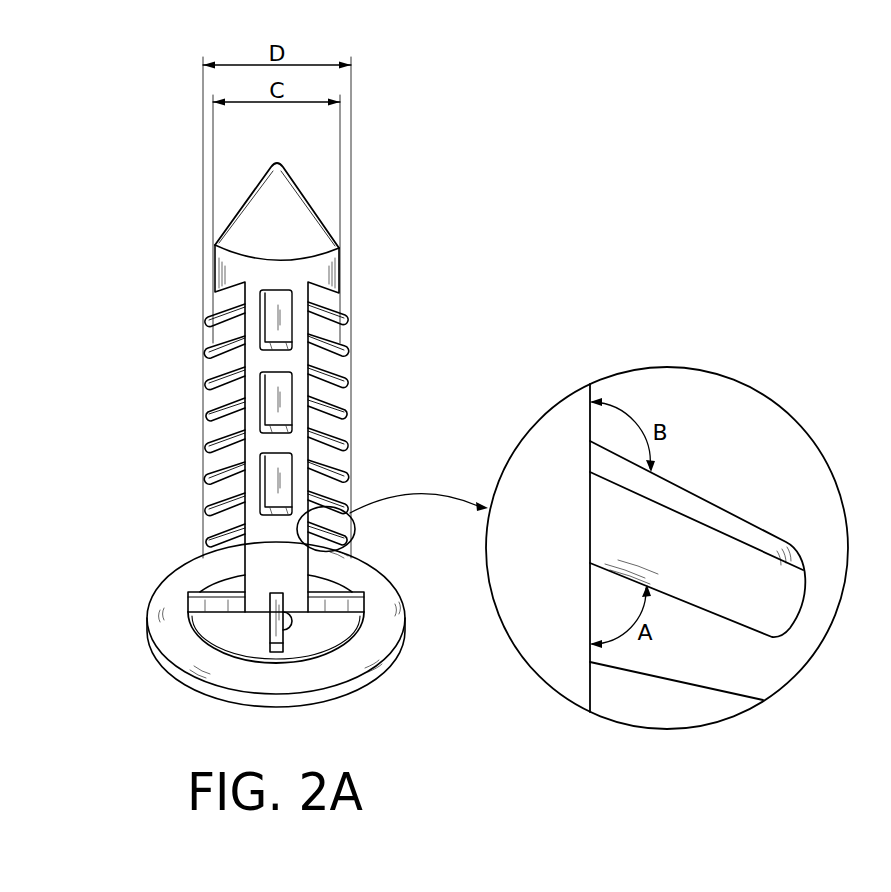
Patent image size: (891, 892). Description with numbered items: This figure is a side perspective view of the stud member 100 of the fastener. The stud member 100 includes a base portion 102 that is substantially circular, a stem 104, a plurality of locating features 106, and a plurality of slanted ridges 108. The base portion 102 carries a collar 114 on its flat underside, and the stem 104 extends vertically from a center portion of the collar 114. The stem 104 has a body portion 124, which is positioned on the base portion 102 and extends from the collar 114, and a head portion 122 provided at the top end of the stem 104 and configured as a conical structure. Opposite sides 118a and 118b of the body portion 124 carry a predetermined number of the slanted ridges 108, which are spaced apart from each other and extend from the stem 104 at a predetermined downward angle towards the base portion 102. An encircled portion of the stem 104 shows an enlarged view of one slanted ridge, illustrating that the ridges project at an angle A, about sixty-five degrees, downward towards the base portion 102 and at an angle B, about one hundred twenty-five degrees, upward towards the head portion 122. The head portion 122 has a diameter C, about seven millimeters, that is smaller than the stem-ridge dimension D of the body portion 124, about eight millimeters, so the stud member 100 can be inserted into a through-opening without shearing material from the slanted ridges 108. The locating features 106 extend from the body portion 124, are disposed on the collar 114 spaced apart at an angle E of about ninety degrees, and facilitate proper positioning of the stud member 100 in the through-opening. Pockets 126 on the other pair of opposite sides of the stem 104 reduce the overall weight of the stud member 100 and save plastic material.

The stud member 100 is at (182, 193).
The base portion 102 is at (418, 618).
The stem 104 is at (178, 438).
The locating features 106 is at (360, 593).
The slanted ridges 108 is at (350, 435).
The collar 114 is at (235, 630).
The opposite side 118a is at (310, 390).
The opposite side 118b is at (243, 390).
The head portion 122 is at (297, 205).
The body portion 124 is at (255, 563).
The pockets 126 is at (283, 313).